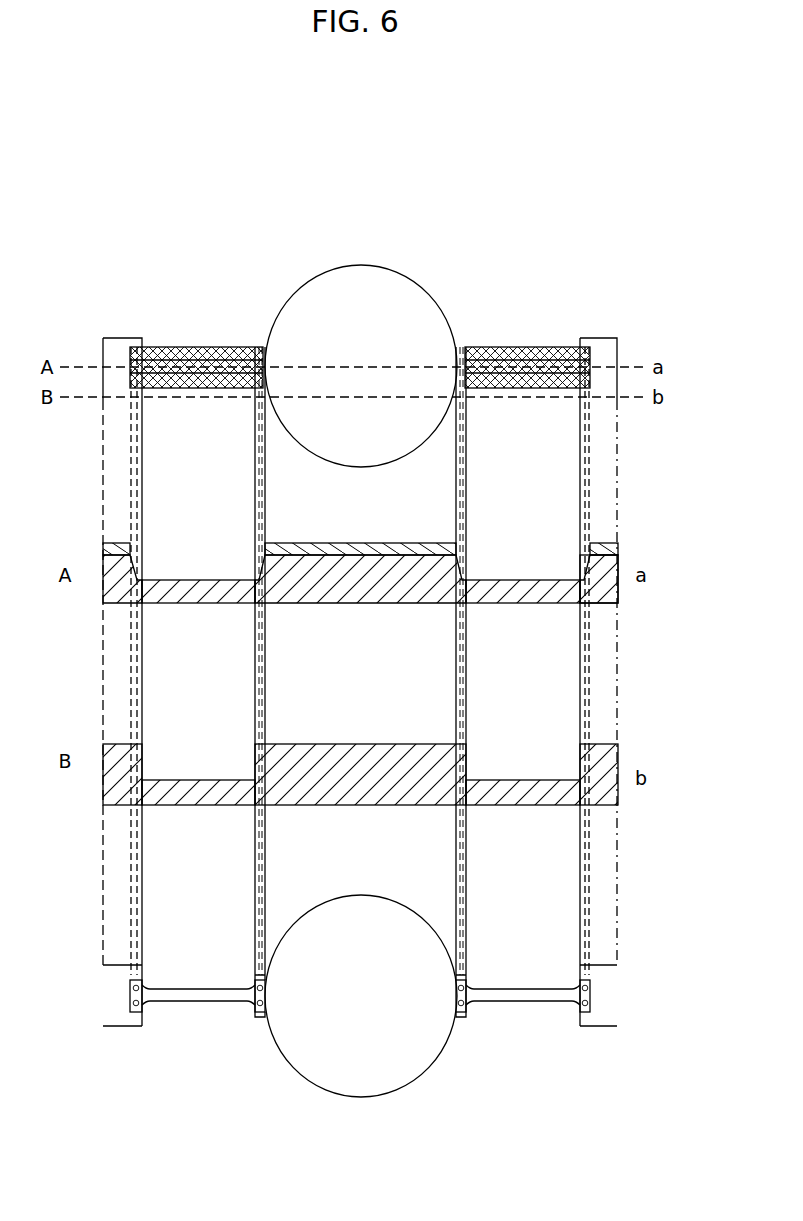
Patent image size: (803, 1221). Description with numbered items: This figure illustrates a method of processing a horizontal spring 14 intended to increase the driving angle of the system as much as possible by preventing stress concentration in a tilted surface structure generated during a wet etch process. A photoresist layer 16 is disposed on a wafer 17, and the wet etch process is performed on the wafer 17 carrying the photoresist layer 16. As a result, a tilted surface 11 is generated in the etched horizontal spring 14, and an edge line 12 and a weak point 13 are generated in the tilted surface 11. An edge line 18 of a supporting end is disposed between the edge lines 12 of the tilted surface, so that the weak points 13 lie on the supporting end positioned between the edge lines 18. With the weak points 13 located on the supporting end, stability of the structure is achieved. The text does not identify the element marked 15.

The tilted surface 11 is at (592, 572).
The edge line 12 is at (590, 628).
The weak point 13 is at (592, 990).
The horizontal spring 14 is at (200, 1000).
The cross-hatched upper layer 15 is at (175, 340).
The photoresist layer 16 is at (125, 545).
The wafer 17 is at (115, 585).
The edge line of a supporting end 18 is at (140, 846).